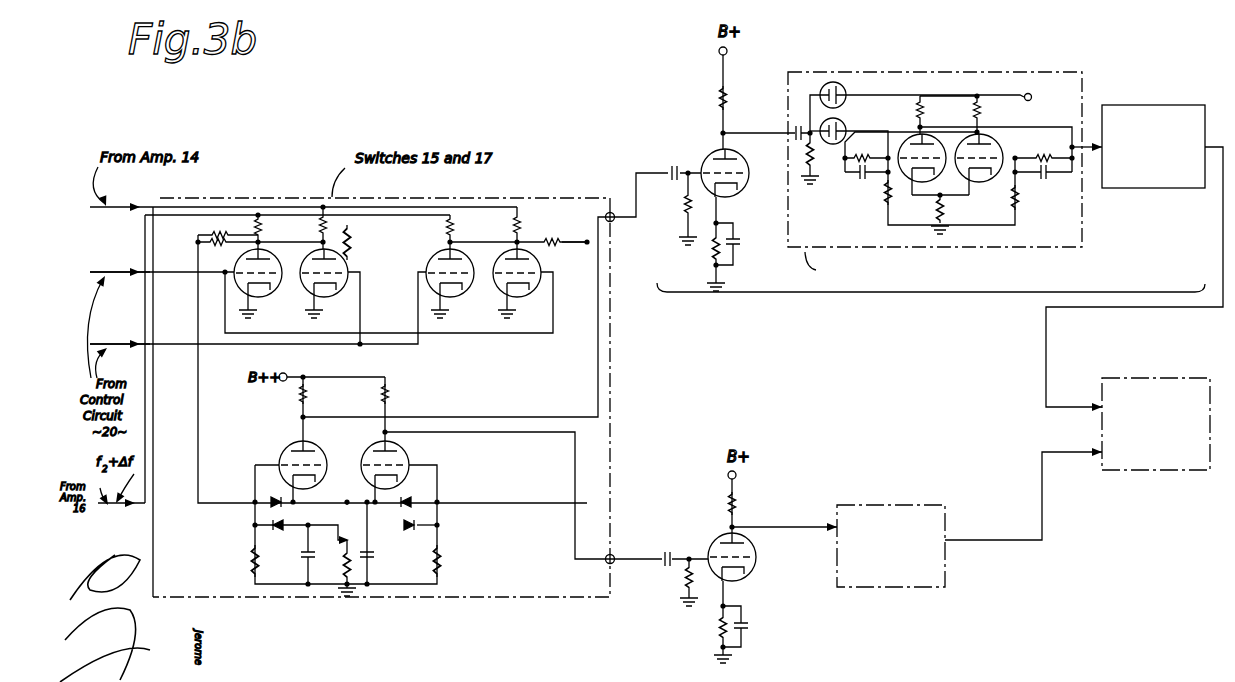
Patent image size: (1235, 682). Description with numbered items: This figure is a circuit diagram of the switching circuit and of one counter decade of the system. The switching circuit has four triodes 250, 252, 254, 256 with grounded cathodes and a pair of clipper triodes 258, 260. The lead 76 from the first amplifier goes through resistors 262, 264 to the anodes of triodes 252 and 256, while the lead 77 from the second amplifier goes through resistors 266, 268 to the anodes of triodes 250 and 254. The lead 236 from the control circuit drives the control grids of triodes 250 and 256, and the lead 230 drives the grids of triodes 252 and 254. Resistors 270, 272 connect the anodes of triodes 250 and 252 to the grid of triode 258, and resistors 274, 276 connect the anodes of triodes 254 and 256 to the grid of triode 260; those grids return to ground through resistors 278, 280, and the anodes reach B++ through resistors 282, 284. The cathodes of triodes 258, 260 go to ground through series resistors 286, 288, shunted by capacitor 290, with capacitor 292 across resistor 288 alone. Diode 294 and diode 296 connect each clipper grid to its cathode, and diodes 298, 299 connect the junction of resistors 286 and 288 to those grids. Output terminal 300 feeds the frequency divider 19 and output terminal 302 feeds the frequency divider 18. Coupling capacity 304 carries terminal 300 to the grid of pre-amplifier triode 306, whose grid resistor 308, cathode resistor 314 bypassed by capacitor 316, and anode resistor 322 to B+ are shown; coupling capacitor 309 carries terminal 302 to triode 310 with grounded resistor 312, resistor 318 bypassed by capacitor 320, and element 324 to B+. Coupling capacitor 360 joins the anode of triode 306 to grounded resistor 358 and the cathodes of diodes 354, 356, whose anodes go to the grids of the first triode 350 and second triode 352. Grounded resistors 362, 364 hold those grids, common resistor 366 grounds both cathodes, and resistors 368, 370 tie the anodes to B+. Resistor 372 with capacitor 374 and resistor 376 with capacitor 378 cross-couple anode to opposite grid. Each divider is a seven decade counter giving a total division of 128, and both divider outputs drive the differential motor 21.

The lead 76 is at (151, 205).
The lead 77 is at (146, 500).
The lead 236 is at (137, 277).
The lead 230 is at (137, 349).
The resistor 270 is at (212, 234).
The resistor 272 is at (226, 250).
The resistor 266 is at (262, 230).
The resistor 262 is at (327, 222).
The resistor 268 is at (447, 226).
The resistor 264 is at (514, 226).
The resistor 274 is at (562, 245).
The resistor 276 is at (545, 250).
The triode 250 is at (275, 292).
The triode 252 is at (341, 292).
The triode 254 is at (467, 292).
The triode 256 is at (534, 292).
The output terminal 300 is at (610, 212).
The resistor 282 is at (299, 395).
The resistor 284 is at (381, 395).
The triode 258 is at (282, 450).
The triode 260 is at (408, 450).
The diode 294 is at (270, 497).
The diode 298 is at (268, 526).
The diode 296 is at (418, 496).
The diode 299 is at (418, 524).
The resistor 286 is at (338, 508).
The resistor 288 is at (345, 568).
The grounded resistor 278 is at (252, 556).
The capacitor 292 is at (302, 562).
The capacitor 290 is at (372, 560).
The grounded resistor 280 is at (442, 560).
The output terminal 302 is at (612, 553).
The coupling capacitor 309 is at (668, 551).
The resistor 322 is at (719, 97).
The triode 306 is at (710, 153).
The coupling capacity 304 is at (672, 165).
The resistor 308 is at (684, 200).
The resistor 314 is at (712, 248).
The capacitor 316 is at (738, 248).
The coupling capacitor 360 is at (792, 125).
The grounded resistor 358 is at (806, 164).
The frequency divider 19 is at (931, 197).
The diode 356 is at (845, 88).
The diode 354 is at (843, 122).
The resistor 368 is at (923, 112).
The resistor 370 is at (979, 112).
The first triode 350 is at (905, 190).
The second triode 352 is at (990, 190).
The resistor 372 is at (883, 148).
The capacitor 374 is at (860, 180).
The grounded resistor 362 is at (885, 202).
The common resistor 366 is at (946, 212).
The grounded resistor 364 is at (1020, 210).
The resistor 376 is at (1042, 156).
The capacitor 378 is at (1046, 178).
The total frequency division 128 is at (1153, 146).
The differential motor 21 is at (1176, 378).
The frequency divider 18 is at (862, 503).
The capacitor 324 is at (736, 506).
The triode 310 is at (710, 538).
The grounded resistor 312 is at (686, 580).
The resistor 318 is at (716, 640).
The capacitor 320 is at (742, 621).